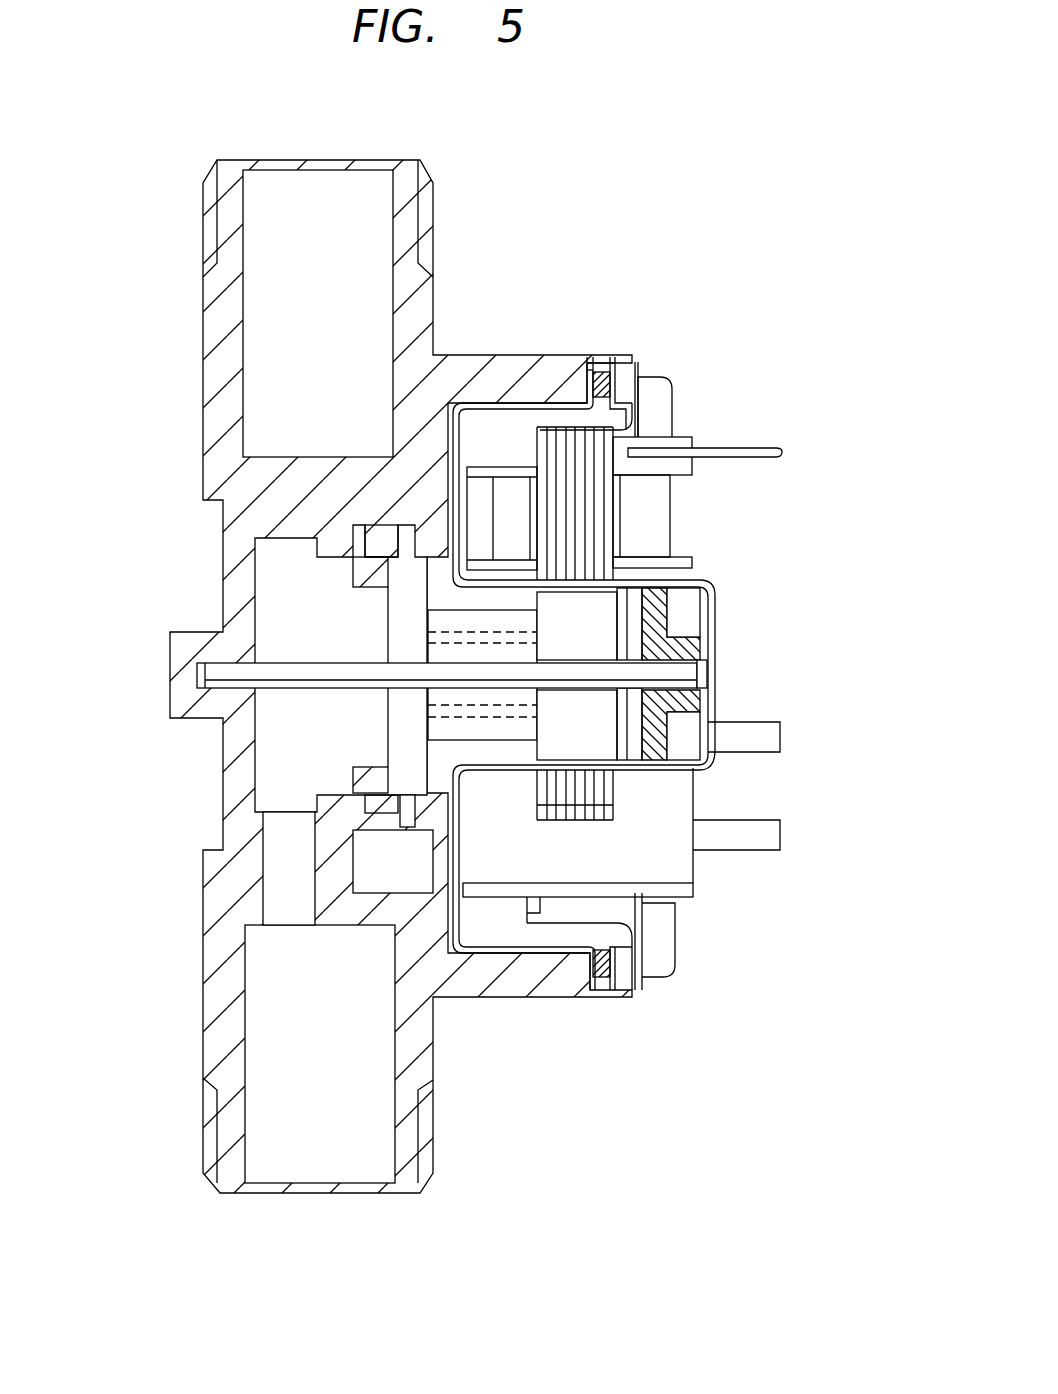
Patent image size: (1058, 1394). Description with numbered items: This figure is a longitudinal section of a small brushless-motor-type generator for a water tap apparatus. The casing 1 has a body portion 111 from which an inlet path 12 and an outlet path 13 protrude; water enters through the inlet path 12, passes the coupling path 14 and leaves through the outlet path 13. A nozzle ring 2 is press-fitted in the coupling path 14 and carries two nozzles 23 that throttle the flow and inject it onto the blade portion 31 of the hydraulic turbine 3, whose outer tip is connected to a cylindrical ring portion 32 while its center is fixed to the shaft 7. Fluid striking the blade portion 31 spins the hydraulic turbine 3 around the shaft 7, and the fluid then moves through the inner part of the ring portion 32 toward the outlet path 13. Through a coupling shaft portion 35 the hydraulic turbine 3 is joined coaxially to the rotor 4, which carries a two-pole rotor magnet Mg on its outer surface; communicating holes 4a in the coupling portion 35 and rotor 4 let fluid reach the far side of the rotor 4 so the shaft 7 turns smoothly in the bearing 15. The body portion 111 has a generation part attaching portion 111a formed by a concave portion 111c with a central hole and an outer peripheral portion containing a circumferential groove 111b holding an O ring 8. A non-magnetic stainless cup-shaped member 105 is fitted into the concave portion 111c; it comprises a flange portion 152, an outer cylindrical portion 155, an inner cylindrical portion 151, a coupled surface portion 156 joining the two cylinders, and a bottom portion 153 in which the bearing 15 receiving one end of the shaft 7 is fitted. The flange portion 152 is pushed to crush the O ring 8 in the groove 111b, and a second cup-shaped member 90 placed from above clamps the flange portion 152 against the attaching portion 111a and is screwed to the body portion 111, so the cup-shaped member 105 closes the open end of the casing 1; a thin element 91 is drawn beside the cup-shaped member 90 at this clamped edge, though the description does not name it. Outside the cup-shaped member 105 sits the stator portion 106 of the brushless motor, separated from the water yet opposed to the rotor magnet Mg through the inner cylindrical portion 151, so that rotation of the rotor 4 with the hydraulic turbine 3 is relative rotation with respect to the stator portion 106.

The casing 1 is at (185, 537).
The nozzle ring 2 is at (383, 825).
The hydraulic turbine 3 is at (353, 640).
The rotor 4 is at (707, 703).
The communicating holes 4a is at (593, 628).
The shaft 7 is at (717, 677).
The O ring 8 is at (603, 372).
The inlet path 12 is at (413, 158).
The outlet path 13 is at (405, 1195).
The coupling path 14 is at (310, 742).
The bearing 15 is at (695, 640).
The nozzles 23 is at (395, 525).
The blade portion 31 is at (428, 830).
The ring portion 32 is at (353, 575).
The coupling shaft portion 35 is at (491, 743).
The cup-shaped member 90 is at (624, 417).
The terminal plate 91 is at (640, 370).
The cup-shaped member 105 is at (705, 580).
The stator portion 106 is at (670, 863).
The body portion 111 is at (186, 802).
The generation part attaching portion 111a is at (570, 403).
The circumferential groove 111b is at (620, 384).
The concave portion 111c is at (472, 438).
The inner cylindrical portion 151 is at (697, 787).
The flange portion 152 is at (625, 970).
The bottom portion 153 is at (717, 603).
The outer cylindrical portion 155 is at (555, 380).
The coupled surface portion 156 is at (465, 840).
The rotor magnet Mg is at (565, 600).